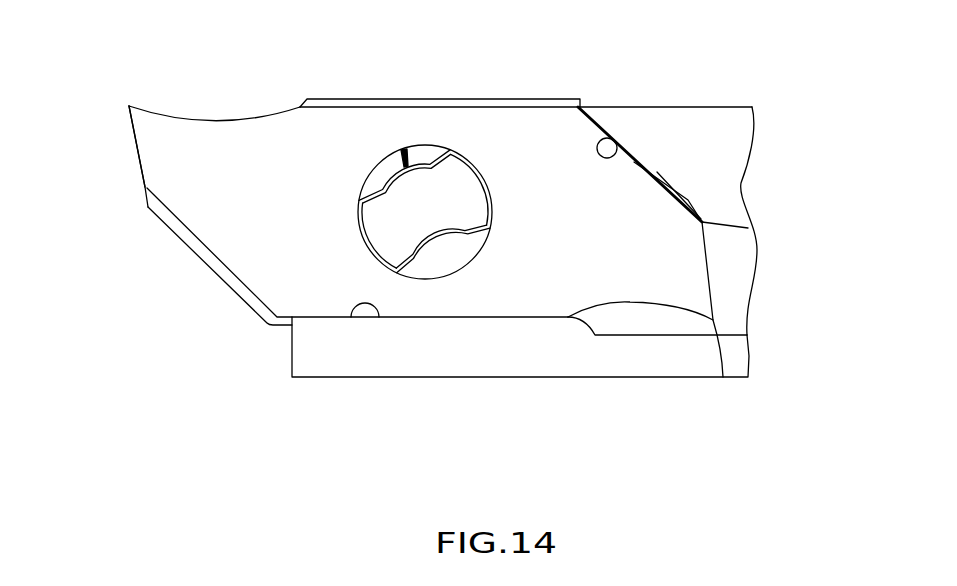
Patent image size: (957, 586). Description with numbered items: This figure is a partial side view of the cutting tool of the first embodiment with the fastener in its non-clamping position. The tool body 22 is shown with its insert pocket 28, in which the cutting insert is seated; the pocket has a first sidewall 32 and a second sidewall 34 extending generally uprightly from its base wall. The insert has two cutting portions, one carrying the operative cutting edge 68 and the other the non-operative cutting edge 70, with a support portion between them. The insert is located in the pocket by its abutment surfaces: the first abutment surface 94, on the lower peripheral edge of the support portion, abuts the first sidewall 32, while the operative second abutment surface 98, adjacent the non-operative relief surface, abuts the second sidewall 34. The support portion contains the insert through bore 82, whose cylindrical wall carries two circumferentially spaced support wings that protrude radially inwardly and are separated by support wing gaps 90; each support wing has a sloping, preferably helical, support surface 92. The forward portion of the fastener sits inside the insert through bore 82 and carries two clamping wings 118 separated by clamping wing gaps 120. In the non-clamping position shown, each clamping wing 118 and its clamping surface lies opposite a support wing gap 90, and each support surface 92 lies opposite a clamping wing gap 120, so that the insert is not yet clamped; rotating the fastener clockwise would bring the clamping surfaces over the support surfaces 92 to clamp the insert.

The tool body 22 is at (703, 125).
The insert pocket 28 is at (613, 313).
The first sidewall 32 is at (383, 317).
The second sidewall 34 is at (657, 181).
The operative cutting edge 68 is at (129, 106).
The non-operative cutting edge 70 is at (723, 377).
The insert through bore 82 is at (360, 212).
The support wing gaps 90 is at (484, 168).
The support surfaces 92 is at (380, 177).
The first abutment surface 94 is at (333, 320).
The operative second abutment surface 98 is at (614, 138).
The clamping wings 118 is at (457, 177).
The clamping wing gaps 120 is at (403, 148).